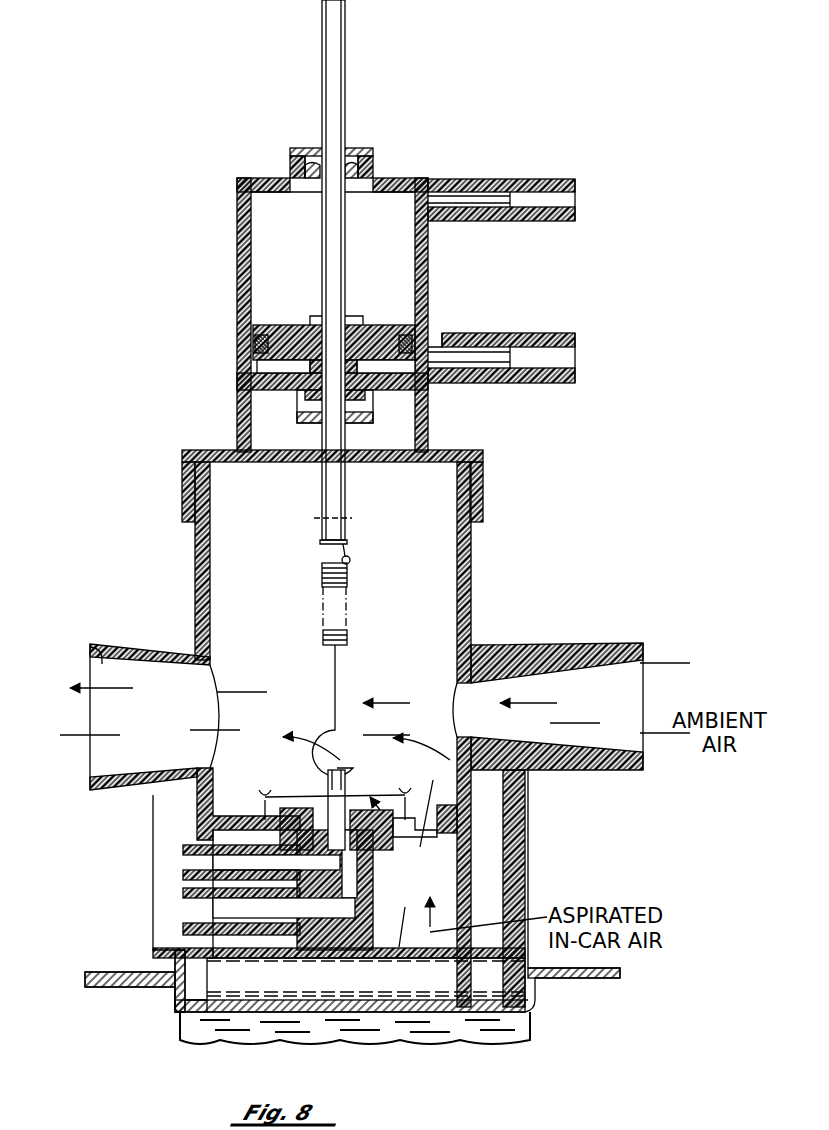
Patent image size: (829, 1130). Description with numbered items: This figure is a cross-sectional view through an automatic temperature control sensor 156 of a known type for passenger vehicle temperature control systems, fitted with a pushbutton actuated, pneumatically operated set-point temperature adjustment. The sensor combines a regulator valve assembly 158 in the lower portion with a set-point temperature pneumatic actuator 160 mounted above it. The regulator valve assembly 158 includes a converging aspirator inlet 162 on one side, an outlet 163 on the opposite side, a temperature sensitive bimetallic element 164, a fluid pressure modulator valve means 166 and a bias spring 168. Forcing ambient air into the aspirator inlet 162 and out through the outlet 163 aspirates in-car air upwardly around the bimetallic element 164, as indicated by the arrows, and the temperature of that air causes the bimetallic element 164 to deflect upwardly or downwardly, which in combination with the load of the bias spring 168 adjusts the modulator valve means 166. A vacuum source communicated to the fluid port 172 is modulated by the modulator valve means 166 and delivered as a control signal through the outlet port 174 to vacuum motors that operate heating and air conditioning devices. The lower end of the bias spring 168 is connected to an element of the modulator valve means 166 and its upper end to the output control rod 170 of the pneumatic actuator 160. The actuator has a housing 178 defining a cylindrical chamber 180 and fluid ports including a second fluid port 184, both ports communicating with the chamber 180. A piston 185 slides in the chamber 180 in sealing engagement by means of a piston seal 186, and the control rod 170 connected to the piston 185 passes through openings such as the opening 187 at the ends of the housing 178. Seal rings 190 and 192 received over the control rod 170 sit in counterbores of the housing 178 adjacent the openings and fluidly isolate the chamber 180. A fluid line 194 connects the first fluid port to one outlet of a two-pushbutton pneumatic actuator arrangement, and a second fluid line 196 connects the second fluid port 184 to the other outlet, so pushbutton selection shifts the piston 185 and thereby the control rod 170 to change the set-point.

The automatic temperature control sensor 156 is at (177, 473).
The regulator valve assembly 158 is at (482, 572).
The set-point temperature pneumatic actuator 160 is at (400, 170).
The converging aspirator inlet 162 is at (640, 660).
The outlet 163 is at (90, 672).
The temperature sensitive bimetallic element 164 is at (290, 793).
The fluid pressure modulator valve means 166 is at (383, 852).
The bias spring 168 is at (345, 643).
The output control rod 170 is at (345, 482).
The fluid port 172 is at (220, 865).
The outlet port 174 is at (220, 912).
The housing 178 is at (428, 272).
The cylindrical chamber 180 is at (302, 272).
The second fluid port 184 is at (510, 358).
The piston 185 is at (270, 323).
The piston seal 186 is at (250, 343).
The opening 187 is at (333, 188).
The seal ring 190 is at (350, 148).
The seal ring 192 is at (510, 198).
The fluid line 194 is at (532, 222).
The second fluid line 196 is at (535, 333).